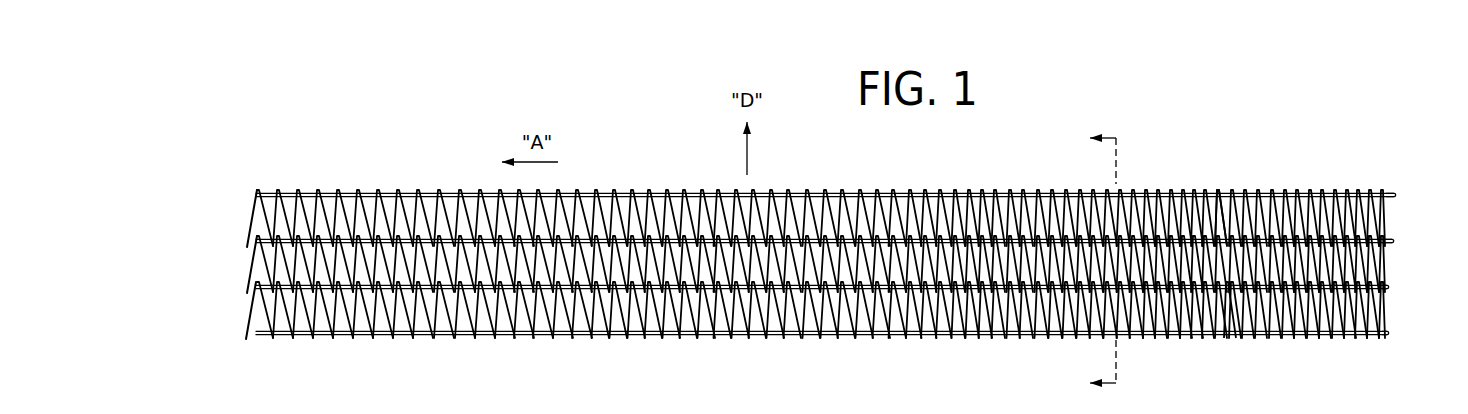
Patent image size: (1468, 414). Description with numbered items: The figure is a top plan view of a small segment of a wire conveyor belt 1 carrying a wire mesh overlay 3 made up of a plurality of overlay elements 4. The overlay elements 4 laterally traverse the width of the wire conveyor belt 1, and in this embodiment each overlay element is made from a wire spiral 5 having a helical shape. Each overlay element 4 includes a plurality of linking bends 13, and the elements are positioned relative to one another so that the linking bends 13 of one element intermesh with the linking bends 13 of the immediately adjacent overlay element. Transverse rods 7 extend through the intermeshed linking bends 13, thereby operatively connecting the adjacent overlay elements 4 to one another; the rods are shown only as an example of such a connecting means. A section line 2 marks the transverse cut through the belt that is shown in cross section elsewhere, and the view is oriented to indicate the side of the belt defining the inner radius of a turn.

The wire conveyor belt 1 is at (655, 136).
The section line 2- 2 is at (1091, 260).
The wire mesh overlay 3 is at (832, 183).
The overlay elements 4 is at (252, 212).
The wire spirals 5 is at (312, 210).
The transverse rods 7 is at (1393, 289).
The linking bends 13 is at (1262, 228).